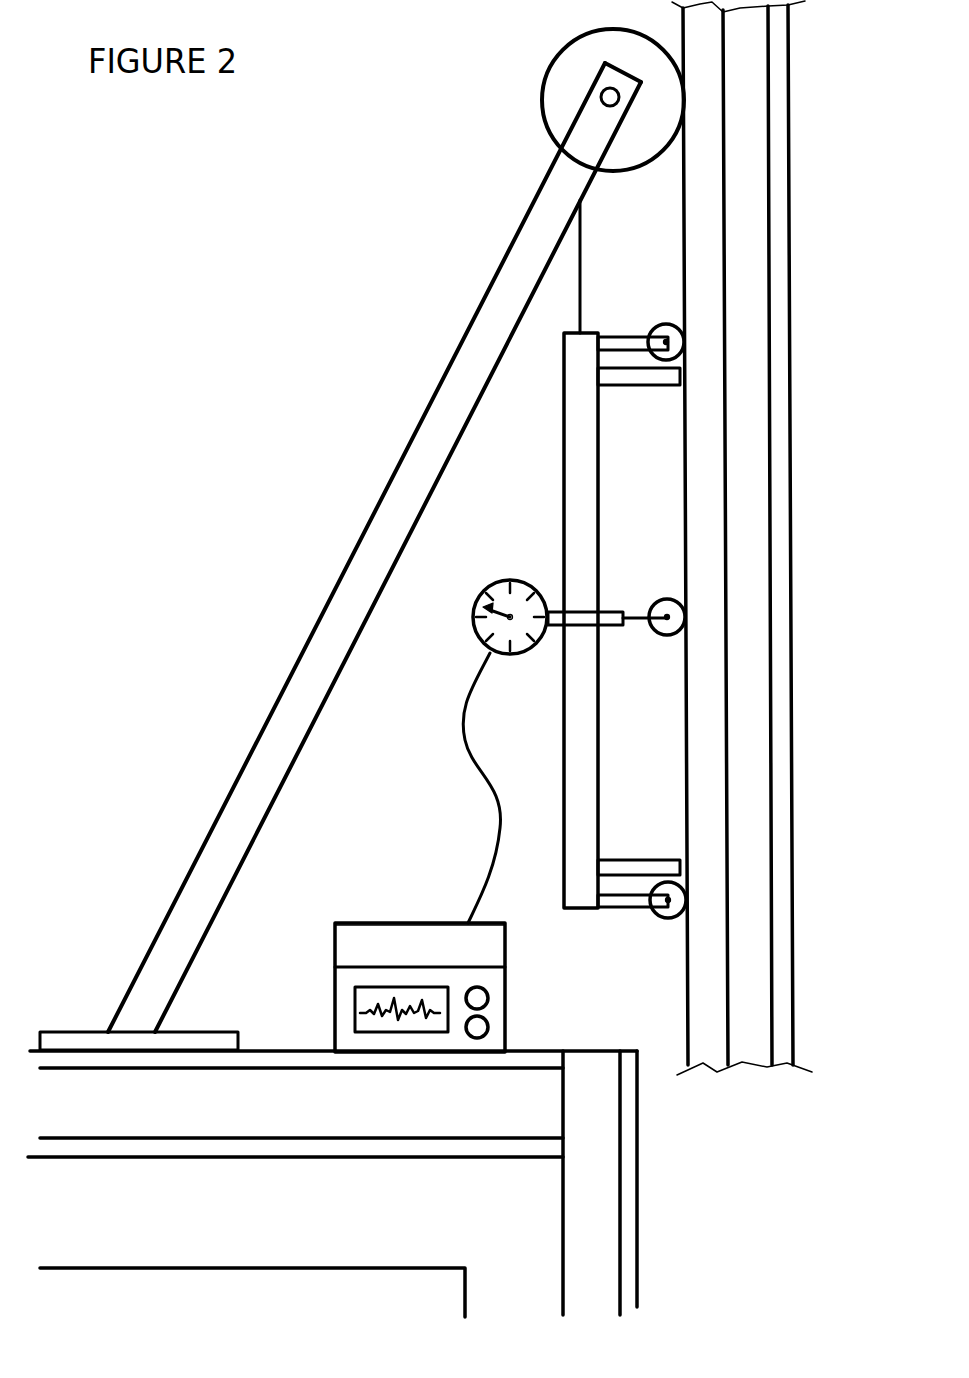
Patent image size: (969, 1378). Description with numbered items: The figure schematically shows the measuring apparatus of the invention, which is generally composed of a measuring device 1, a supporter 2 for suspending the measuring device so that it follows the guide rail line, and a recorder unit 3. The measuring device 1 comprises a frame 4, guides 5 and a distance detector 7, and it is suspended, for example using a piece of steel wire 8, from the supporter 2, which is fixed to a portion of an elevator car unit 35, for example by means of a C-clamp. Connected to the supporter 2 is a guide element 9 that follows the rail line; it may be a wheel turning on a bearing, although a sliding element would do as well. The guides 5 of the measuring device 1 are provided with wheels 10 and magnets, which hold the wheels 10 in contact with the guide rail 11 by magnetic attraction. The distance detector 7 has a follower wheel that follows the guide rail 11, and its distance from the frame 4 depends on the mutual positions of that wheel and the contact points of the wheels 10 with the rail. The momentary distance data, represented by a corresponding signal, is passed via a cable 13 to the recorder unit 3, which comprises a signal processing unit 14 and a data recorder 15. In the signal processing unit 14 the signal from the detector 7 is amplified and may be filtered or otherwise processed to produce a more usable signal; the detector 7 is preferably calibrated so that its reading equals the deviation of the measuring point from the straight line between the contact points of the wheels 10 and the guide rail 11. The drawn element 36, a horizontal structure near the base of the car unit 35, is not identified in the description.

The measuring assembly 1 is at (550, 458).
The support beam 2 is at (423, 453).
The control and recording unit 3 is at (318, 954).
The bracket 4 is at (575, 532).
The guide arm 5 is at (670, 377).
The dial gauge 7 is at (483, 632).
The cable 8 is at (578, 283).
The pulley 9 is at (565, 77).
The roller 10 is at (668, 323).
The rail 11 is at (803, 823).
The signal cable 13 is at (493, 795).
The recorder 14 is at (403, 935).
The control knobs 15 is at (497, 1012).
The floor 35 is at (252, 1295).
The table 36 is at (180, 1120).